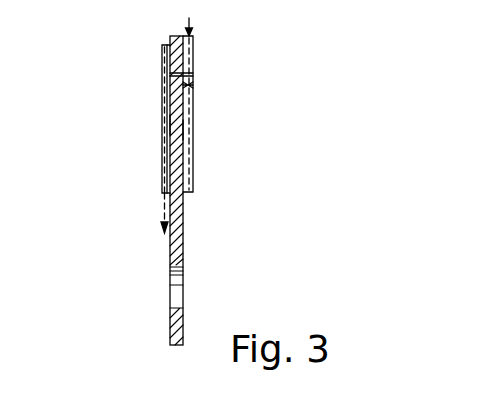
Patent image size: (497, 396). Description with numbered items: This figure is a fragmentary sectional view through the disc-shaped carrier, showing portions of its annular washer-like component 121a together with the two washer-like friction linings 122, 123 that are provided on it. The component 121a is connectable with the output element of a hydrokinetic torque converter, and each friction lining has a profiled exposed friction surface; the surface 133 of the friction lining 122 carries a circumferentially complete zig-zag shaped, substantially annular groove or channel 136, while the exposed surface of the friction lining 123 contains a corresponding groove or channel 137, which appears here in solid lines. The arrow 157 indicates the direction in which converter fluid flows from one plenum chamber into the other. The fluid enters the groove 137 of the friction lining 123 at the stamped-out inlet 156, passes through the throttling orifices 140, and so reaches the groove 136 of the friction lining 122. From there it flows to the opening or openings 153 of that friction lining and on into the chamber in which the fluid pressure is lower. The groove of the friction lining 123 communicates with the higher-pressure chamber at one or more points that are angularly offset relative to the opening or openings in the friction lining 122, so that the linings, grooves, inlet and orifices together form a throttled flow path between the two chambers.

The washer-like component 121a is at (183, 247).
The friction lining 122 is at (162, 47).
The friction lining 123 is at (193, 167).
The friction surface 133 is at (162, 103).
The groove 136 is at (162, 125).
The groove 137 is at (193, 130).
The throttling orifices 140 is at (186, 100).
The opening 153 is at (162, 190).
The stamped-out inlet 156 is at (193, 78).
The arrow 157 is at (195, 38).